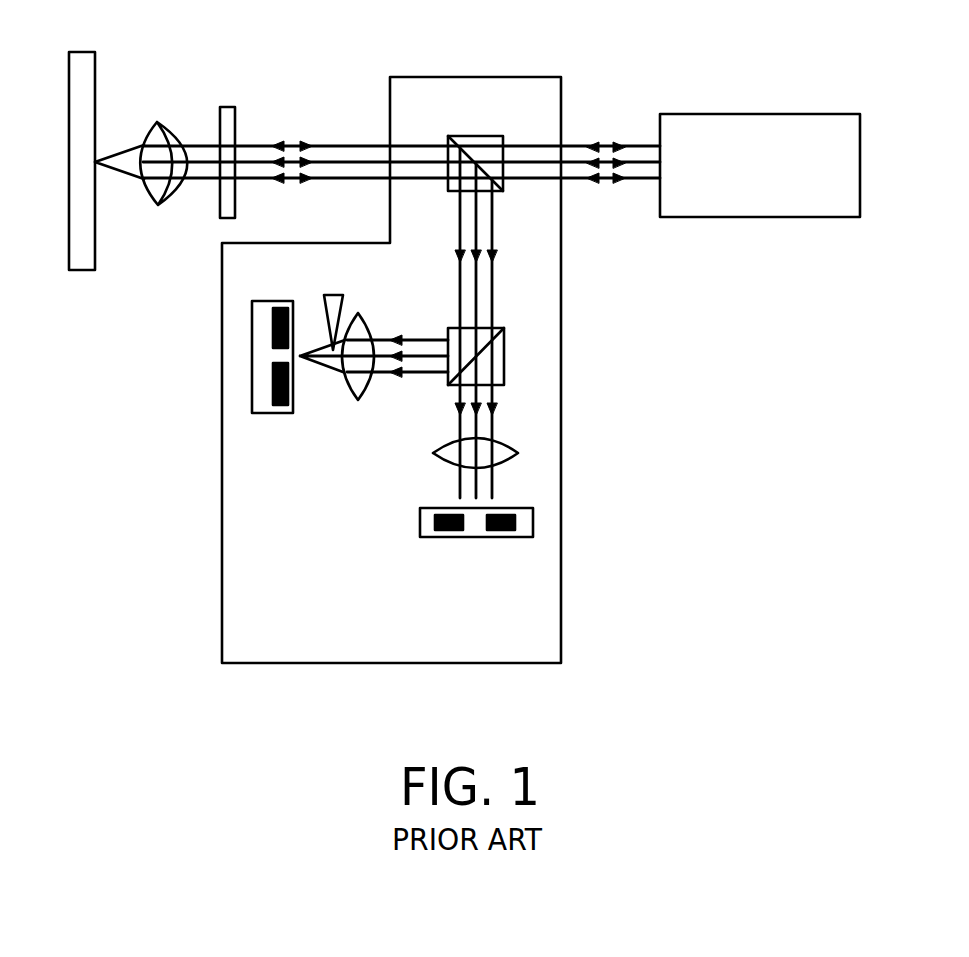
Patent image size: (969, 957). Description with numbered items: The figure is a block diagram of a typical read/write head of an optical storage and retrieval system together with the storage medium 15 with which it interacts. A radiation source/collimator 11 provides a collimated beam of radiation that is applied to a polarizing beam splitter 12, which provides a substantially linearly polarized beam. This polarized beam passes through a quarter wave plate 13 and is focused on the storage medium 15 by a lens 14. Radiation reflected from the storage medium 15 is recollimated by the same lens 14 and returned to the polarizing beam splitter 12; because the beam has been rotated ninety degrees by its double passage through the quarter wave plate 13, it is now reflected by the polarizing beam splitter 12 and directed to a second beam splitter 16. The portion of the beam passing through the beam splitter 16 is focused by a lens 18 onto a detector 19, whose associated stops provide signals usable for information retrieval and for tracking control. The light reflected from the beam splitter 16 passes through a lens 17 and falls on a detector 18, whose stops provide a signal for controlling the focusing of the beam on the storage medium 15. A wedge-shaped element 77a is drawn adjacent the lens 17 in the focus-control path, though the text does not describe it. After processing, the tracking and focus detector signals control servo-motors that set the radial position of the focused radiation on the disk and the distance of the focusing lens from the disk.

The radiation source/collimator 11 is at (760, 114).
The polarizing beam splitter 12 is at (476, 136).
The quarter wave plate 13 is at (228, 107).
The lens 14 is at (157, 122).
The storage medium 15 is at (82, 52).
The beam splitter 16 is at (503, 320).
The lens 17 is at (363, 315).
The lens / detector 18 is at (275, 301).
The detector 19 is at (512, 508).
The wedge prism 77a is at (334, 293).